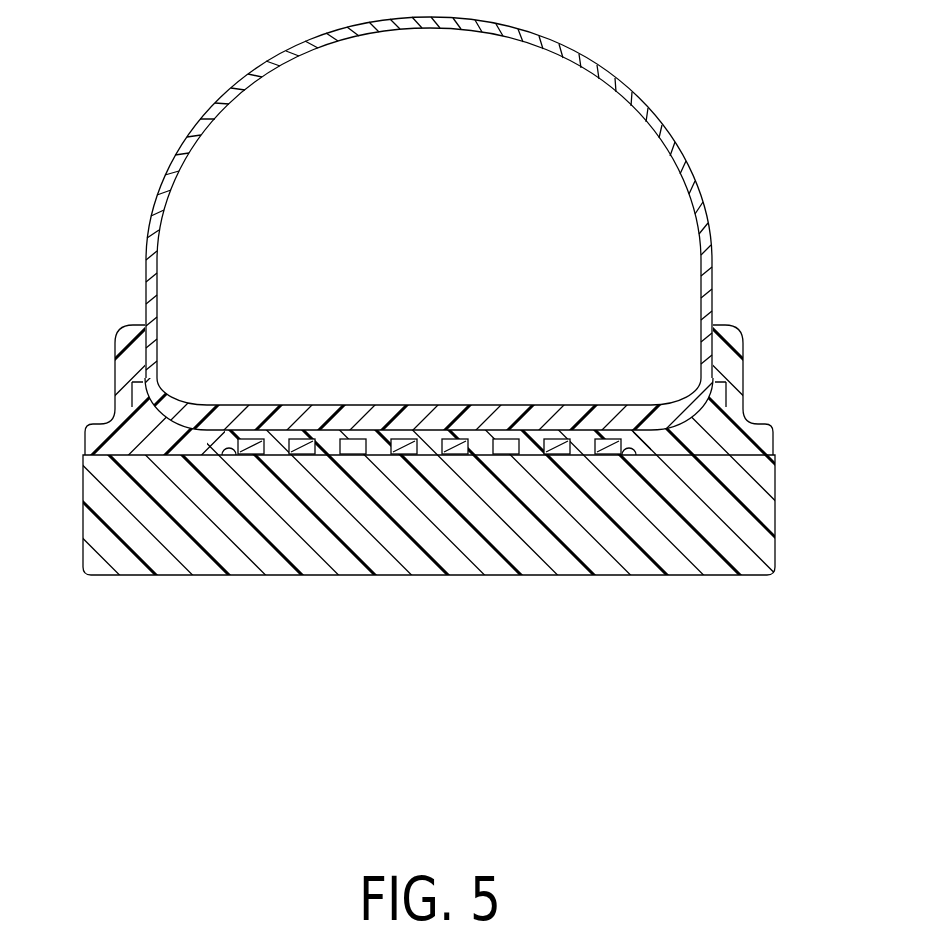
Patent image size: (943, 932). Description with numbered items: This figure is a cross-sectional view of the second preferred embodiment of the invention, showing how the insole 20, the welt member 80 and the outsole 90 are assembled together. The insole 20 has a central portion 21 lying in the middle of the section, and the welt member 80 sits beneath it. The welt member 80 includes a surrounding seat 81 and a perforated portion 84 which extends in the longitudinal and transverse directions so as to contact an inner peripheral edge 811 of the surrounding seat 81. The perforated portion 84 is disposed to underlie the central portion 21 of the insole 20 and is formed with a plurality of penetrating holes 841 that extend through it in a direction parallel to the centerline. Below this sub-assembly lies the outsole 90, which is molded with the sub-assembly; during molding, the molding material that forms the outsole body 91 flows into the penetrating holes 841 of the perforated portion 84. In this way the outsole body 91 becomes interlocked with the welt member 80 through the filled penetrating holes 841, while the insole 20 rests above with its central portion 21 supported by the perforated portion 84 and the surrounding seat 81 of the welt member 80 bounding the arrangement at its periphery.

The insole 20 is at (510, 393).
The central portion 21 is at (418, 405).
The welt member 80 is at (118, 398).
The surrounding seat 81 is at (160, 442).
The inner peripheral edge 811 is at (234, 449).
The perforated portion 84 is at (352, 455).
The penetrating holes 841 is at (410, 447).
The outsole 90 is at (400, 578).
The outsole body 91 is at (770, 513).